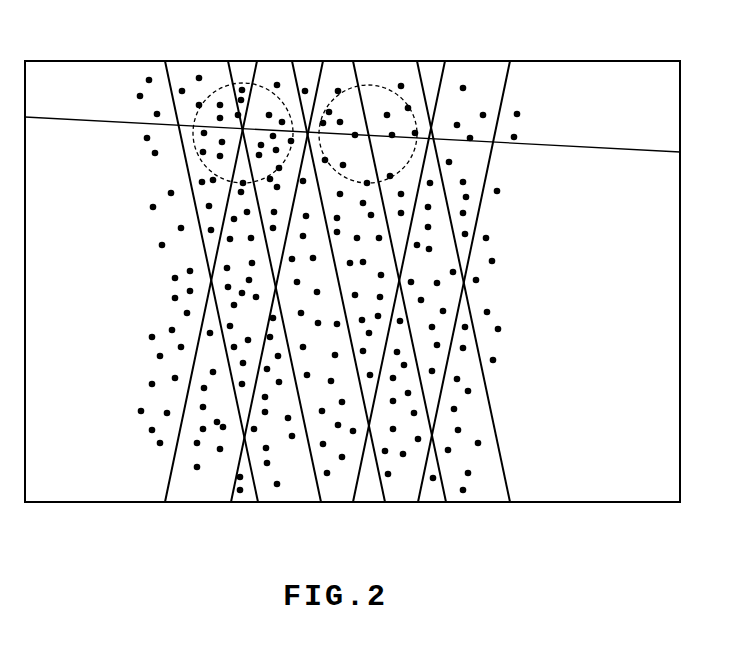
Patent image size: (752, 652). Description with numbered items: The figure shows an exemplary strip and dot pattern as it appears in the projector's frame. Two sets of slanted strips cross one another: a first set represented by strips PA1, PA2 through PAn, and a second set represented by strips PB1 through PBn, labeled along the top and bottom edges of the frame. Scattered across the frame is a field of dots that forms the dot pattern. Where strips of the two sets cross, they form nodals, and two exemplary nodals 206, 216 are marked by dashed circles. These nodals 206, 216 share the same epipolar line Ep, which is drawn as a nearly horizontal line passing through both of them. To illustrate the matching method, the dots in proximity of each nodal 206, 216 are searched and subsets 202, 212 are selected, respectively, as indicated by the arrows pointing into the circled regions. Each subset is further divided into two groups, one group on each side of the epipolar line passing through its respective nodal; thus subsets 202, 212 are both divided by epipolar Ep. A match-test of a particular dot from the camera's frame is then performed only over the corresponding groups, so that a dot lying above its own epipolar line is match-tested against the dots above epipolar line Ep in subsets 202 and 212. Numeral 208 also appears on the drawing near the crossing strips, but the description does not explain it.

The strip PA1 is at (168, 71).
The strip PA2 is at (229, 72).
The strip PAn is at (425, 72).
The strip PB1 is at (165, 482).
The strip PBn is at (418, 488).
The epipolar line Ep is at (555, 148).
The subset of dots 202 is at (166, 172).
The nodal 206 is at (252, 116).
The line intersection 208 is at (288, 114).
The subset of dots 212 is at (436, 179).
The nodal 216 is at (385, 110).